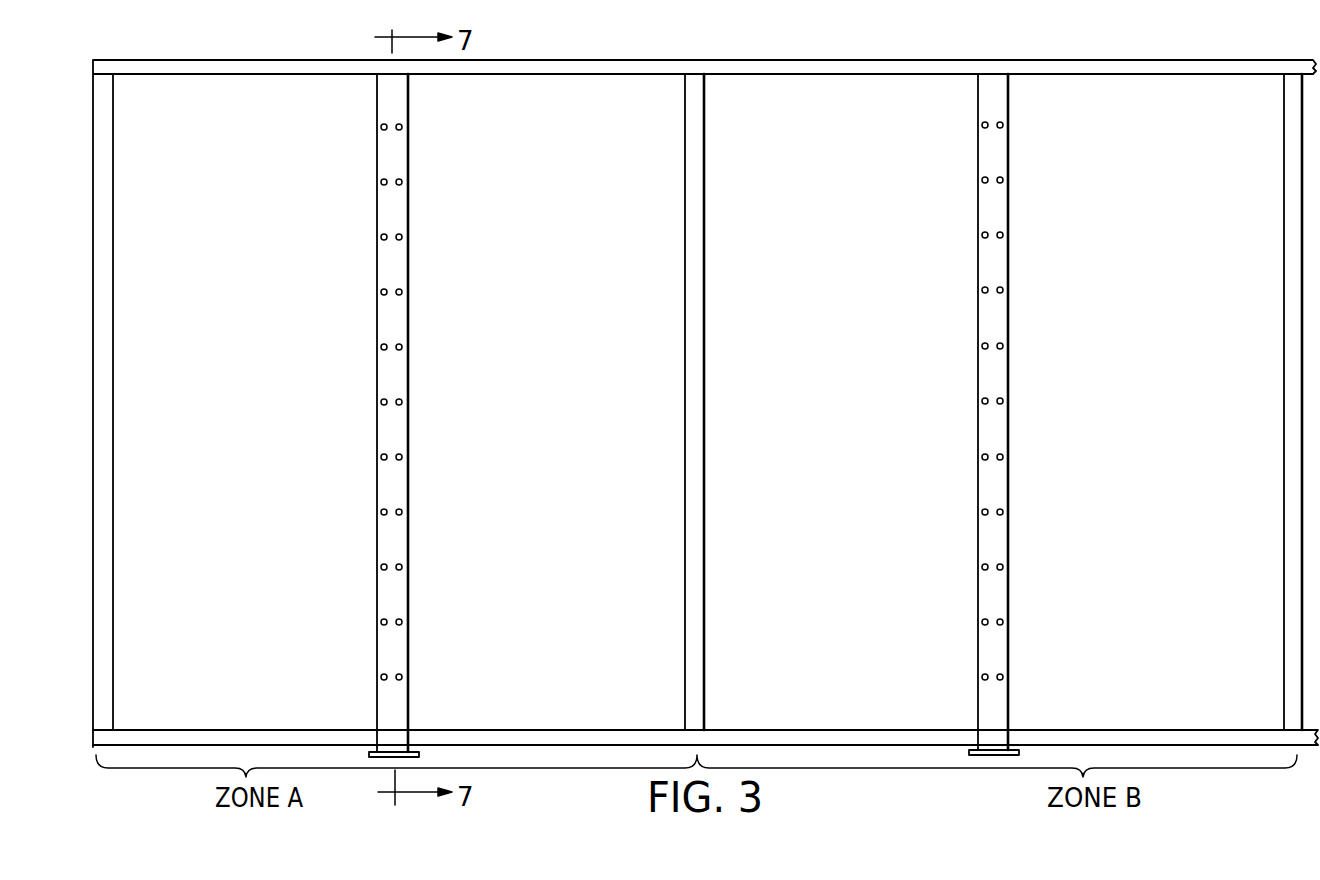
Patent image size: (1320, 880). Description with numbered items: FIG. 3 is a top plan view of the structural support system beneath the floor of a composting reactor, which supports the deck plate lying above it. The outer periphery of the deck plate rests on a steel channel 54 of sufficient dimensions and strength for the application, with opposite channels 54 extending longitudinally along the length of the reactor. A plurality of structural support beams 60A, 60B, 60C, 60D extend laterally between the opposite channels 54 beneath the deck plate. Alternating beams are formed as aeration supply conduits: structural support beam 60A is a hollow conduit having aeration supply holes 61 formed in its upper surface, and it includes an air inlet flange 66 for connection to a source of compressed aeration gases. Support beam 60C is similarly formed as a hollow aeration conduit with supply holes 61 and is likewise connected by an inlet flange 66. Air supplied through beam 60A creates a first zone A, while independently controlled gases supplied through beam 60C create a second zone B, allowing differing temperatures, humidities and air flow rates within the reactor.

The steel channel 54 is at (318, 66).
The structural support beam 60A is at (387, 373).
The structural support beam 60B is at (685, 206).
The structural support beam 60C is at (985, 369).
The structural support beam 60D is at (1290, 203).
The aeration supply holes 61 is at (399, 235).
The air inlet flange 66 is at (391, 757).